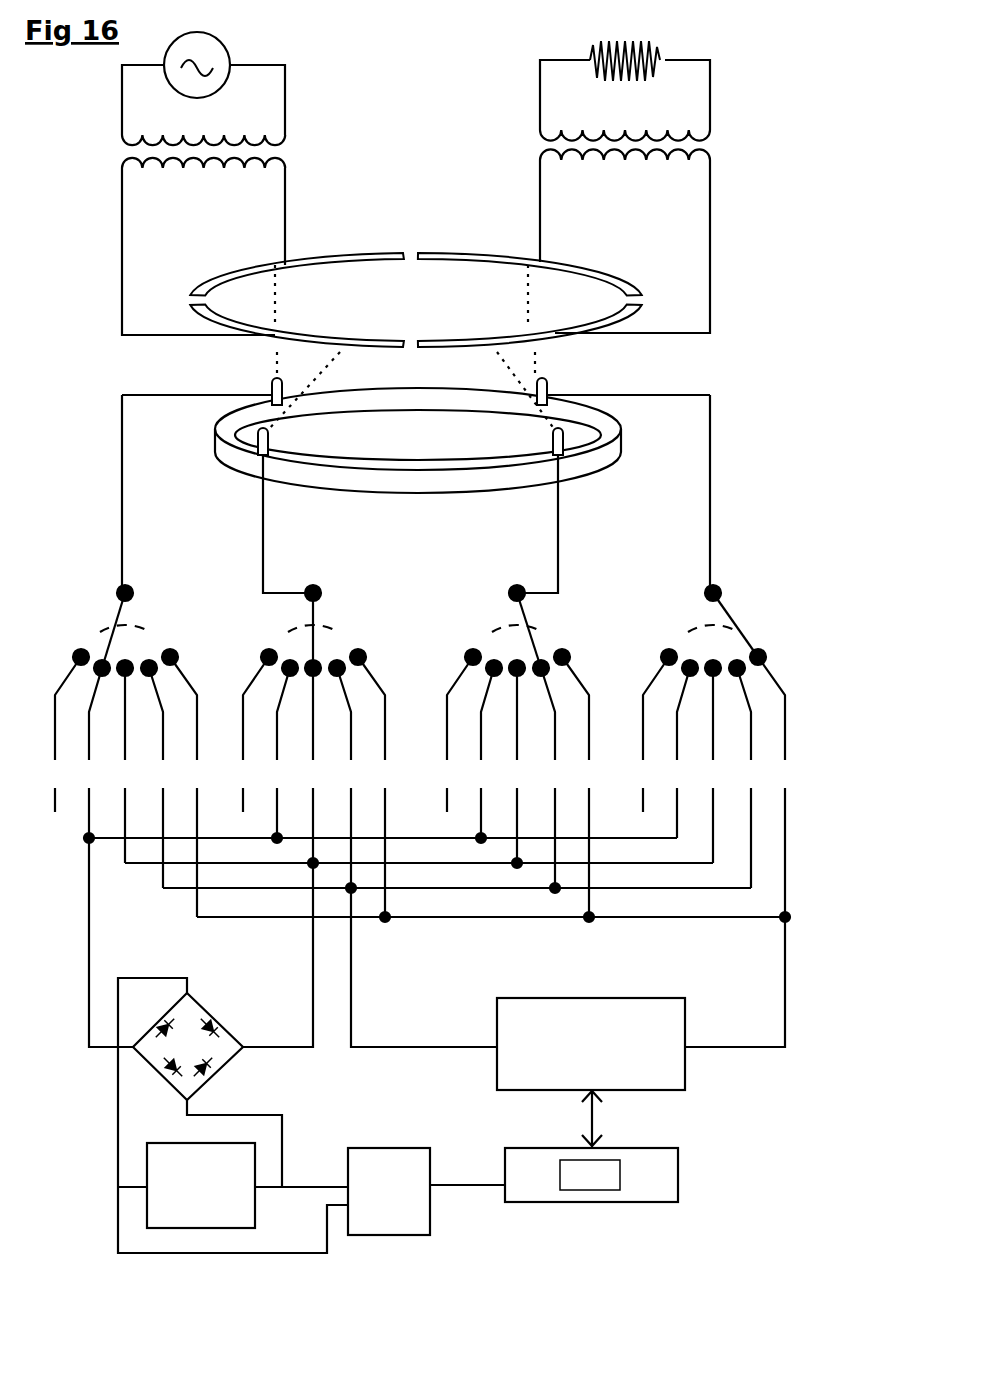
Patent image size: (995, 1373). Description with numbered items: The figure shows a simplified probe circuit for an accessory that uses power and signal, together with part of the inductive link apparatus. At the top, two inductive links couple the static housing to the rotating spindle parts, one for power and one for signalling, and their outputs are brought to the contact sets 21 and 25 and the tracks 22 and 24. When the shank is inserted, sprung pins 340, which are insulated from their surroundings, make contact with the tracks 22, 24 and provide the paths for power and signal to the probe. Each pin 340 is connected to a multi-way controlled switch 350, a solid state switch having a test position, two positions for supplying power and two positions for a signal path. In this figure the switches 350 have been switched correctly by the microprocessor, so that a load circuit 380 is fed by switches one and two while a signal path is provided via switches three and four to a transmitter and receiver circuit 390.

The contact set 25 is at (204, 183).
The contact set 21 is at (634, 187).
The track 24 is at (343, 256).
The track 22 is at (518, 257).
The sprung pins 340 is at (270, 393).
The multi-way controlled switch 350 is at (120, 625).
The load circuit 380 is at (323, 1120).
The transmitter and receiver circuit 390 is at (722, 1129).